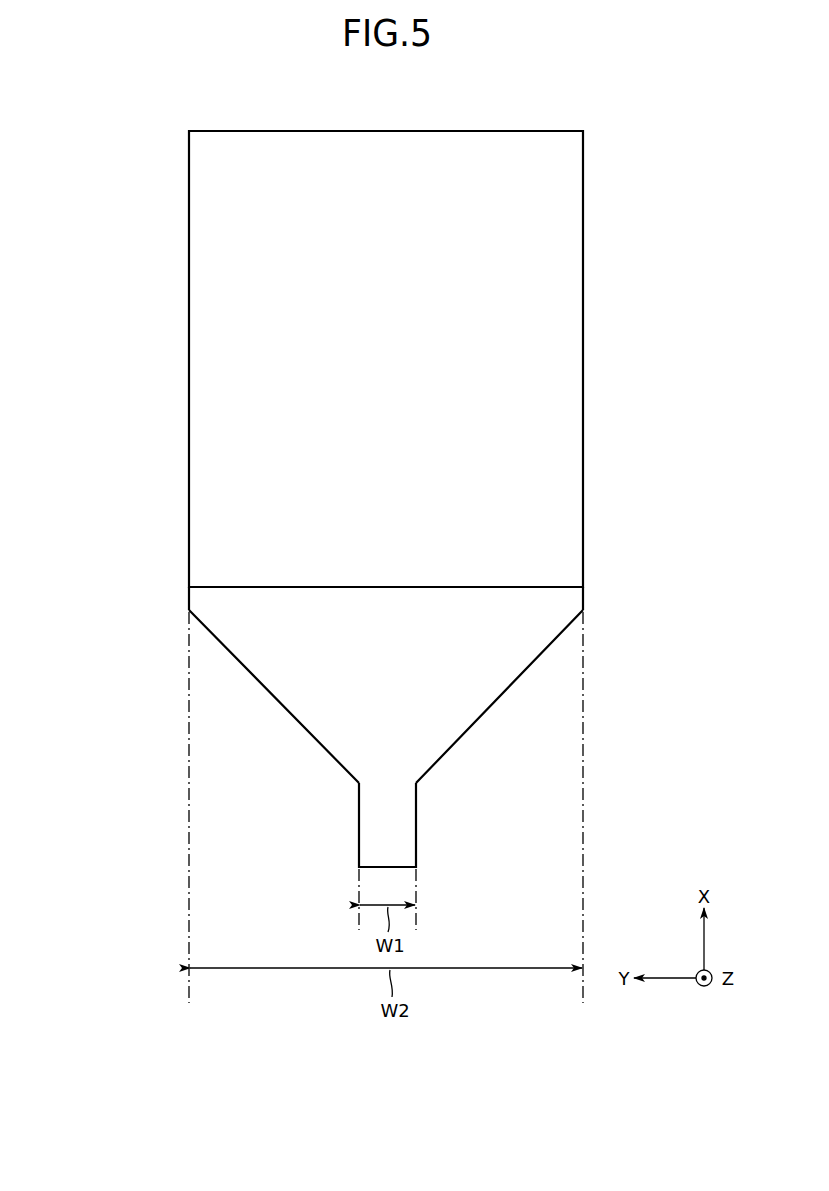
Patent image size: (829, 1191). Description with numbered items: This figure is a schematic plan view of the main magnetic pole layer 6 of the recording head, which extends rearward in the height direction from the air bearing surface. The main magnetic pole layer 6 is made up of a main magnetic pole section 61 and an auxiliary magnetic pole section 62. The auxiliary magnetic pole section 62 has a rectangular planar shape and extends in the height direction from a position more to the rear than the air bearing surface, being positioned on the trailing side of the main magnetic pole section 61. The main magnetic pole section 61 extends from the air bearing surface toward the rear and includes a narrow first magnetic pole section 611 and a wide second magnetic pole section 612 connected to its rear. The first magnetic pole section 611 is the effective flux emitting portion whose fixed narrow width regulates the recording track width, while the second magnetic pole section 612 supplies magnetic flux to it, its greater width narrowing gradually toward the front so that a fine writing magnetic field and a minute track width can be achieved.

The main magnetic pole layer 6 is at (314, 499).
The main magnetic pole section 61 is at (333, 738).
The auxiliary magnetic pole section 62 is at (228, 588).
The first magnetic pole section 611 is at (358, 828).
The second magnetic pole section 612 is at (309, 734).